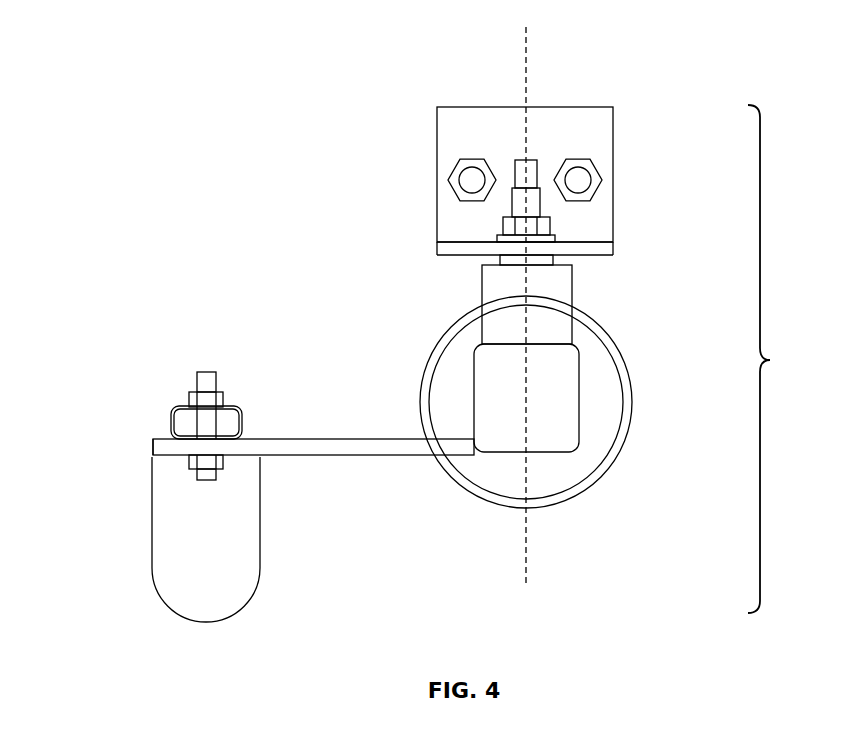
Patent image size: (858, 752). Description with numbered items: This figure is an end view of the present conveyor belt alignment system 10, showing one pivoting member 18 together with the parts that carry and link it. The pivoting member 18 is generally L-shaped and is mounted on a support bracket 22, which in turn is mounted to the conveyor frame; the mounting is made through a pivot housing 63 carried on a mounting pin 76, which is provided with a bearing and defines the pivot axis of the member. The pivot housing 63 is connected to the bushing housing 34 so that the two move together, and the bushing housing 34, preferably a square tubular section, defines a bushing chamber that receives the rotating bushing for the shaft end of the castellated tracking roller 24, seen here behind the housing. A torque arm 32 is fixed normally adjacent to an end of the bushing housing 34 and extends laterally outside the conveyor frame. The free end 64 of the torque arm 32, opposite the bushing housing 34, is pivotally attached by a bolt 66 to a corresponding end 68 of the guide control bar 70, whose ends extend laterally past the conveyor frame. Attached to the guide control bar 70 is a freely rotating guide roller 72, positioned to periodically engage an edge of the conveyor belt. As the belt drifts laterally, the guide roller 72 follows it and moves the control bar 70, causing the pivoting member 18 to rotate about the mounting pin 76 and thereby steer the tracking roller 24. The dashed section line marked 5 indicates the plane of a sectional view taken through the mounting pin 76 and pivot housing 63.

The section line 5- 5 is at (530, 27).
The conveyor belt alignment system 10 is at (774, 359).
The pivoting member 18 is at (647, 105).
The support bracket 22 is at (613, 218).
The castellated tracking roller 24 is at (632, 425).
The torque arm 32 is at (327, 456).
The bushing housing 34 is at (579, 398).
The pivot housing 63 is at (572, 288).
The free end 64 is at (155, 447).
The bolt 66 is at (207, 372).
The end of guide control bar 68 is at (171, 420).
The guide control bar 70 is at (243, 420).
The guide roller 72 is at (152, 528).
The mounting pin 76 is at (520, 158).